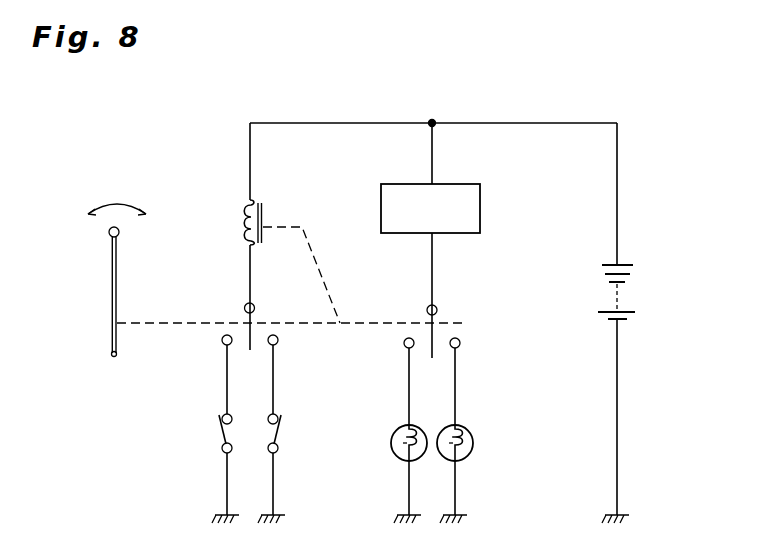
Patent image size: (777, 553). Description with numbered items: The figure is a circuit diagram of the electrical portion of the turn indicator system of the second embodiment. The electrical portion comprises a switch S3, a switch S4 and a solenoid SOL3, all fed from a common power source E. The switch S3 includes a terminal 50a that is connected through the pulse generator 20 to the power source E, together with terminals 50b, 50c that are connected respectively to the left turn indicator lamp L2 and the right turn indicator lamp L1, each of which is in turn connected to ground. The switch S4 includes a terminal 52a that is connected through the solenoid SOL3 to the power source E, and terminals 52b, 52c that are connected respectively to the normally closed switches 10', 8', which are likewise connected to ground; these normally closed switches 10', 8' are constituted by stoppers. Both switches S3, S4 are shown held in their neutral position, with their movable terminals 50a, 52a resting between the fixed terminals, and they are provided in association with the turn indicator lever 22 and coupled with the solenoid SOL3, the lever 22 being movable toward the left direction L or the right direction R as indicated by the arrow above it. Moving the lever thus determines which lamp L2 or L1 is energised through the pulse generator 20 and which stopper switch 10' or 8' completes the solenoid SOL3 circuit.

The pulse generator 20 is at (480, 208).
The power source E is at (623, 265).
The solenoid SOL3 is at (247, 212).
The turn indicator lever 22 is at (115, 280).
The left direction L is at (82, 195).
The right direction R is at (152, 195).
The terminal 52a is at (245, 308).
The terminal 52b is at (224, 343).
The terminal 52c is at (276, 343).
The switch S4 is at (262, 321).
The switch S3 is at (458, 323).
The terminal 50a is at (427, 310).
The terminal 50b is at (405, 346).
The terminal 50c is at (459, 346).
The normally closed switch 10' is at (197, 468).
The normally closed switch 8' is at (297, 468).
The left turn indicator lamp L2 is at (391, 437).
The right turn indicator lamp L1 is at (475, 445).